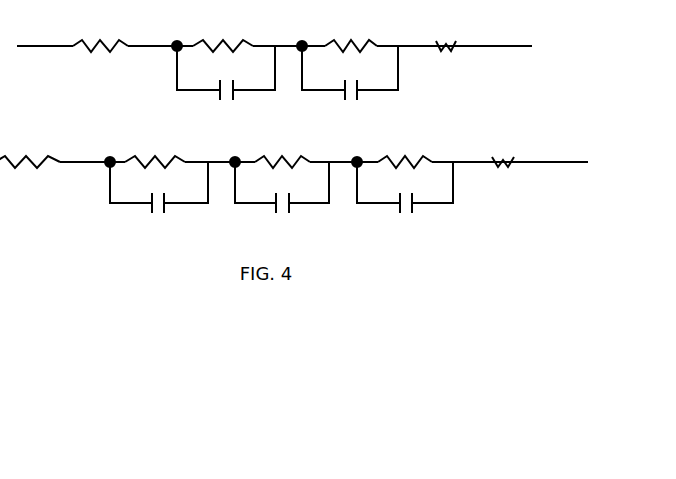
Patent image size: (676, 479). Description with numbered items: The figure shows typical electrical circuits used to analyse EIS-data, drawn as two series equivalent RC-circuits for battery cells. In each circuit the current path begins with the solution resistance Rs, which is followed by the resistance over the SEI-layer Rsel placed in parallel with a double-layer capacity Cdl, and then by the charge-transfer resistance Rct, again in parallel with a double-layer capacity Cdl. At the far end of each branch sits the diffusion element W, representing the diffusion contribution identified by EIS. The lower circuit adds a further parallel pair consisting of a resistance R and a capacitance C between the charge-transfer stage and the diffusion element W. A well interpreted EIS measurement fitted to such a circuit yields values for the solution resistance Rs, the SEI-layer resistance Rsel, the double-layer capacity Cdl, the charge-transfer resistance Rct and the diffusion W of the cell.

The solution resistance Rs is at (64, 94).
The resistance over the SEI-layer Rsel is at (189, 94).
The charge-transfer resistance Rct is at (316, 94).
The resistance R is at (405, 152).
The diffusion element W is at (479, 97).
The double-layer capacity Cdl is at (254, 129).
The capacitance C is at (405, 187).